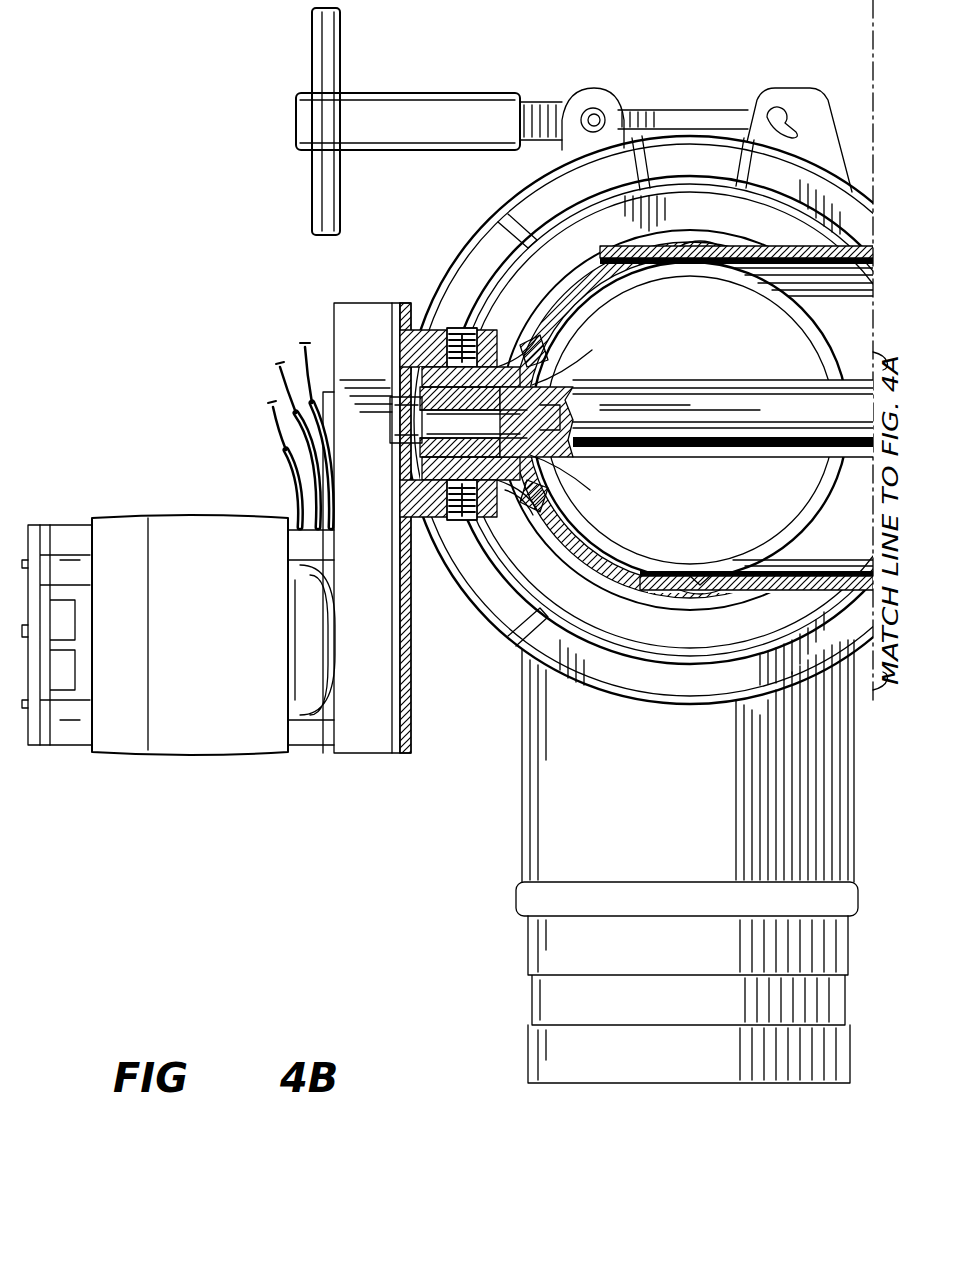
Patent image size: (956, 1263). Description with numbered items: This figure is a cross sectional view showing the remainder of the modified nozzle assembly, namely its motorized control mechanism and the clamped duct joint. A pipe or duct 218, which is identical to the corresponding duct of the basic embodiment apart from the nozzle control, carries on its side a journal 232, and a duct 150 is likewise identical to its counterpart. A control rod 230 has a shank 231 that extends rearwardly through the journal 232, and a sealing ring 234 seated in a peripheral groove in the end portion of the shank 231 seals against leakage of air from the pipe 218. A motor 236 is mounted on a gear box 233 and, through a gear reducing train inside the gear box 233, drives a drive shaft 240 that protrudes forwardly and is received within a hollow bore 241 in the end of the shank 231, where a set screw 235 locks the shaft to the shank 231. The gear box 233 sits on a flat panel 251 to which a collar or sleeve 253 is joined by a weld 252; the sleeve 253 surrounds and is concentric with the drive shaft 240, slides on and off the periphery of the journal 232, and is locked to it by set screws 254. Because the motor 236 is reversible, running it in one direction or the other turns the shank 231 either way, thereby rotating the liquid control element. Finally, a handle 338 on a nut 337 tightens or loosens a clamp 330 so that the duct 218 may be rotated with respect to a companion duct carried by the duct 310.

The duct 150 is at (850, 588).
The pipe or duct 218 is at (592, 558).
The control rod 230 is at (731, 378).
The shank 231 is at (628, 395).
The journal 232 is at (491, 512).
The gear box 233 is at (335, 320).
The sealing ring 234 is at (548, 452).
The set screw 235 is at (402, 412).
The motor 236 is at (222, 520).
The drive shaft 240 is at (411, 450).
The hollow bore 241 is at (560, 393).
The flat panel 251 is at (407, 312).
The weld 252 is at (427, 310).
The collar or sleeve 253 is at (438, 512).
The set screws 254 is at (460, 330).
The duct 310 is at (522, 816).
The clamp 330 is at (498, 194).
The nut 337 is at (430, 102).
The handle 338 is at (340, 63).